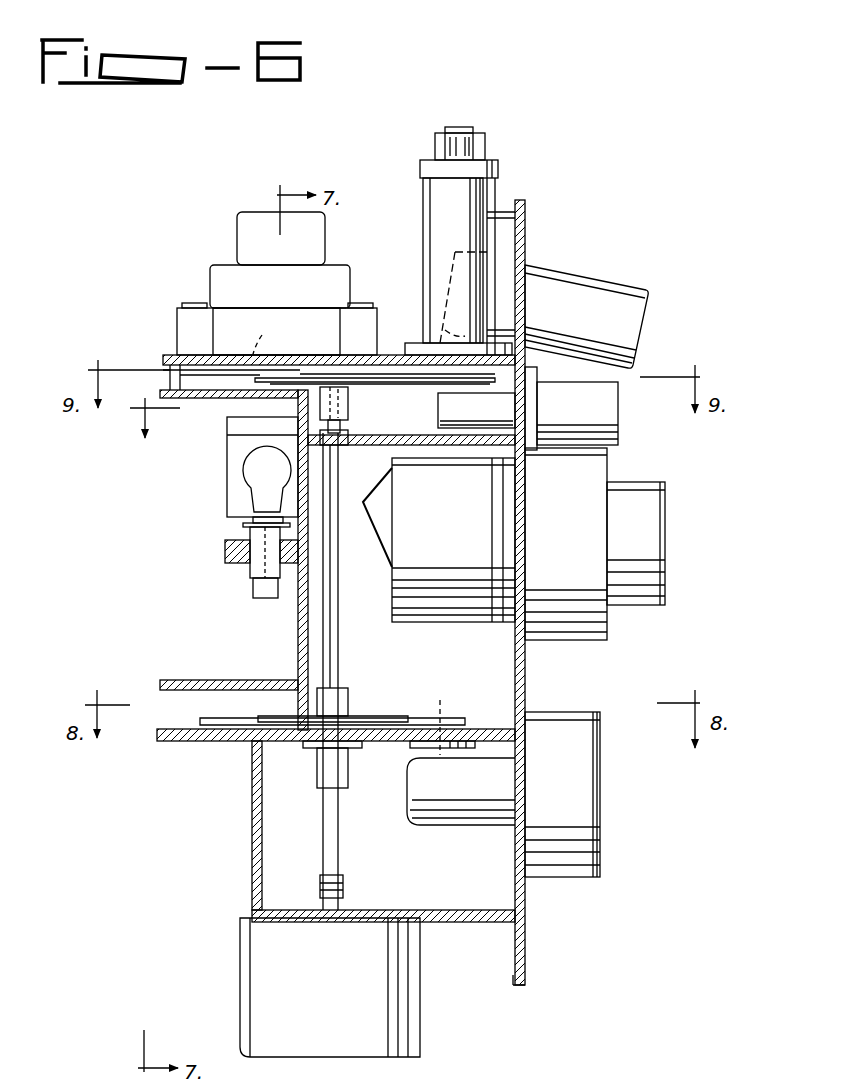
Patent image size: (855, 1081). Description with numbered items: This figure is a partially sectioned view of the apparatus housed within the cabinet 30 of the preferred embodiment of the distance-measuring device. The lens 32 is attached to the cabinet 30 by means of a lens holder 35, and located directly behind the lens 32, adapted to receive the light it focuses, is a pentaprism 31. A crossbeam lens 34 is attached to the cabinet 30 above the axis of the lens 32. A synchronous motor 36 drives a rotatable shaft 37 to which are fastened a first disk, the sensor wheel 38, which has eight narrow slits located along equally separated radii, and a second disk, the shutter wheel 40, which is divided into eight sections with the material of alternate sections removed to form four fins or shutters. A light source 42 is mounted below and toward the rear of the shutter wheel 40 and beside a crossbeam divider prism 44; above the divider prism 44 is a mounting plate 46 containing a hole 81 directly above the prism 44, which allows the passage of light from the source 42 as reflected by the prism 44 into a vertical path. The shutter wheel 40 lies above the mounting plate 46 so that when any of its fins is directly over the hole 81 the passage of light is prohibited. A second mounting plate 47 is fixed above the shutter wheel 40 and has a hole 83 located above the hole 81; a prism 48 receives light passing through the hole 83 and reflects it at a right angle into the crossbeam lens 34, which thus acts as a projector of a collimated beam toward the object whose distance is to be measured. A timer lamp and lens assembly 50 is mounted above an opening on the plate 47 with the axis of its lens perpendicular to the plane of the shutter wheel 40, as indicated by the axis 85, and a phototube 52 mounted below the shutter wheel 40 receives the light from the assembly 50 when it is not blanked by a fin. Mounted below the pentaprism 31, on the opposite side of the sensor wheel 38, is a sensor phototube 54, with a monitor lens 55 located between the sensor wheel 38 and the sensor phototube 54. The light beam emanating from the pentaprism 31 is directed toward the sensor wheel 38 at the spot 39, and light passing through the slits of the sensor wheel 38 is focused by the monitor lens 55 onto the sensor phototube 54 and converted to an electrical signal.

The cabinet 30 is at (527, 246).
The pentaprism 31 is at (390, 523).
The lens 32 is at (650, 534).
The crossbeam lens 34 is at (610, 312).
The lens holder 35 is at (575, 534).
The synchronous motor 36 is at (320, 994).
The rotatable shaft 37 is at (332, 670).
The sensor wheel 38 is at (222, 720).
The spot on sensor wheel 39 is at (444, 720).
The shutter wheel 40 is at (420, 382).
The light source 42 is at (262, 480).
The crossbeam divider prism 44 is at (240, 452).
The mounting plate 46 is at (160, 394).
The second mounting plate 47 is at (170, 355).
The prism 48 is at (290, 300).
The timer lamp and lens assembly 50 is at (430, 212).
The phototube 52 is at (490, 418).
The sensor phototube 54 is at (482, 792).
The monitor lens 55 is at (412, 756).
The hole 81 is at (248, 426).
The hole 83 is at (266, 333).
The axis of timer lamp lens 85 is at (444, 322).